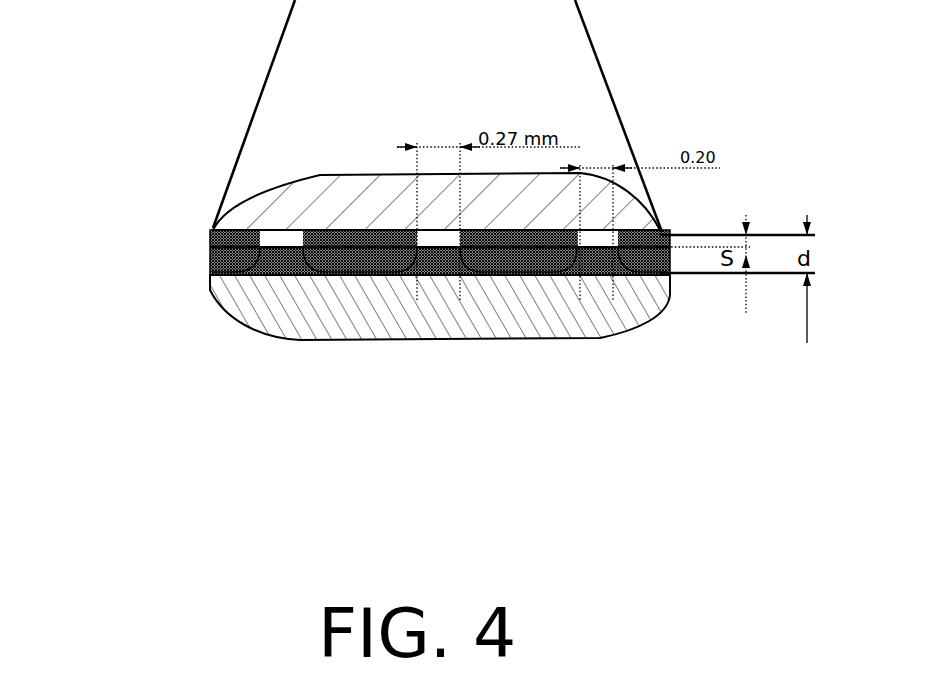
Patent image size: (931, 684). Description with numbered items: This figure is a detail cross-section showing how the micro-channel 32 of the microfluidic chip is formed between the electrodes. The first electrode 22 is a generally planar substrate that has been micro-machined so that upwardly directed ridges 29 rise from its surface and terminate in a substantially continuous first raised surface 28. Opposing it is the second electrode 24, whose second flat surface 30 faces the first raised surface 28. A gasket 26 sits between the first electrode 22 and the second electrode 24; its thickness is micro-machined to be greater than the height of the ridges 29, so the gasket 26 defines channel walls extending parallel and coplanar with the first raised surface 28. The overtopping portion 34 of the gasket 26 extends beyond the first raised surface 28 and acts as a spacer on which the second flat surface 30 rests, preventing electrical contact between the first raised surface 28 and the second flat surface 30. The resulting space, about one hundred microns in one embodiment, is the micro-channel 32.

The first electrode 22 is at (272, 303).
The second electrode 24 is at (260, 203).
The gasket 26 is at (230, 258).
The first raised surface 28 is at (283, 243).
The upwardly directed ridges 29 is at (313, 258).
The second flat surface 30 is at (418, 260).
The micro-channel 32 is at (598, 238).
The overtopping portion 34 is at (262, 240).